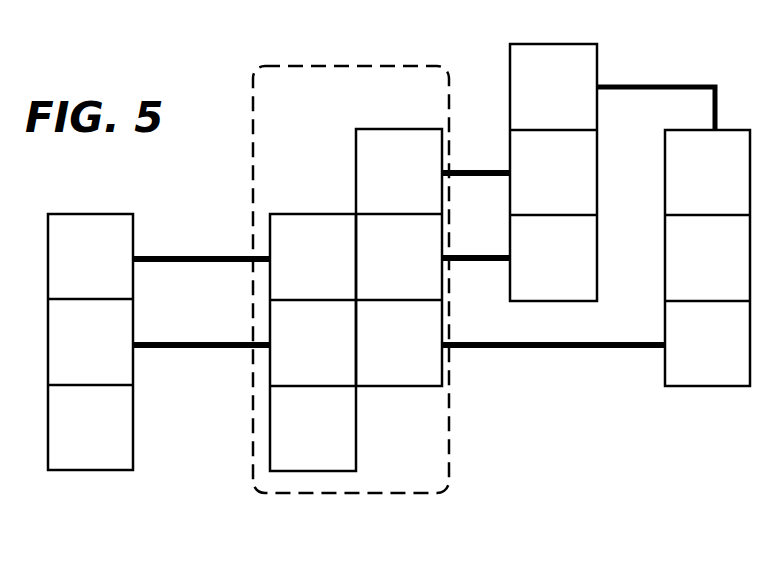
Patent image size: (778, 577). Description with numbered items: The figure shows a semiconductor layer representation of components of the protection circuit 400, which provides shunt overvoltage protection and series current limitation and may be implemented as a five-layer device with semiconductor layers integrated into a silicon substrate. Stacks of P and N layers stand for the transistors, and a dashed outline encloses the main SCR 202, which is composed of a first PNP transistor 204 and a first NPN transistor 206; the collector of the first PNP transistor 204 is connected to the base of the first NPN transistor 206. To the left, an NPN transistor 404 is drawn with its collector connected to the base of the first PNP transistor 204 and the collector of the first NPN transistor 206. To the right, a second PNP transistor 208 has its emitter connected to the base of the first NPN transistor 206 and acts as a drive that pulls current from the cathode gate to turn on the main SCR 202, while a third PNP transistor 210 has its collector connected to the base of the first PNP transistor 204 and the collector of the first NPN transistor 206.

The protection circuit 400 is at (399, 284).
The NPN transistor 404 is at (100, 471).
The main SCR 202 is at (450, 422).
The first PNP transistor 204 is at (390, 128).
The first NPN transistor 206 is at (345, 213).
The second PNP transistor 208 is at (698, 387).
The third PNP transistor 210 is at (508, 77).